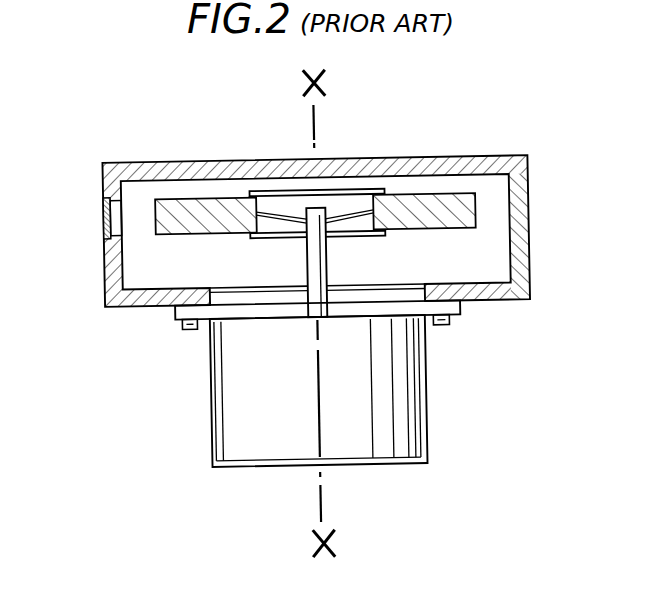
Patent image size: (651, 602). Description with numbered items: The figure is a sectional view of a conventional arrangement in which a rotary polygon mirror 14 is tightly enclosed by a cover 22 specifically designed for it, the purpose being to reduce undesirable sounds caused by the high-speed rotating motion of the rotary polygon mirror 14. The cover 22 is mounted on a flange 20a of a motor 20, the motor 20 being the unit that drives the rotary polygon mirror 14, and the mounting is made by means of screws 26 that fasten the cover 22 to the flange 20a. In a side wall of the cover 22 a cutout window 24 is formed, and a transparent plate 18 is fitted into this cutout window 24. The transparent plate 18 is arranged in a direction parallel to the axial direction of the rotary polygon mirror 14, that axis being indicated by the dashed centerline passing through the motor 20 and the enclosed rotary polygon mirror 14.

The rotary polygon mirror 14 is at (419, 231).
The transparent plate 18 is at (106, 218).
The motor 20 is at (425, 410).
The flange 20a is at (460, 310).
The cover 22 is at (534, 226).
The cutout window 24 is at (122, 218).
The screws 26 is at (186, 328).